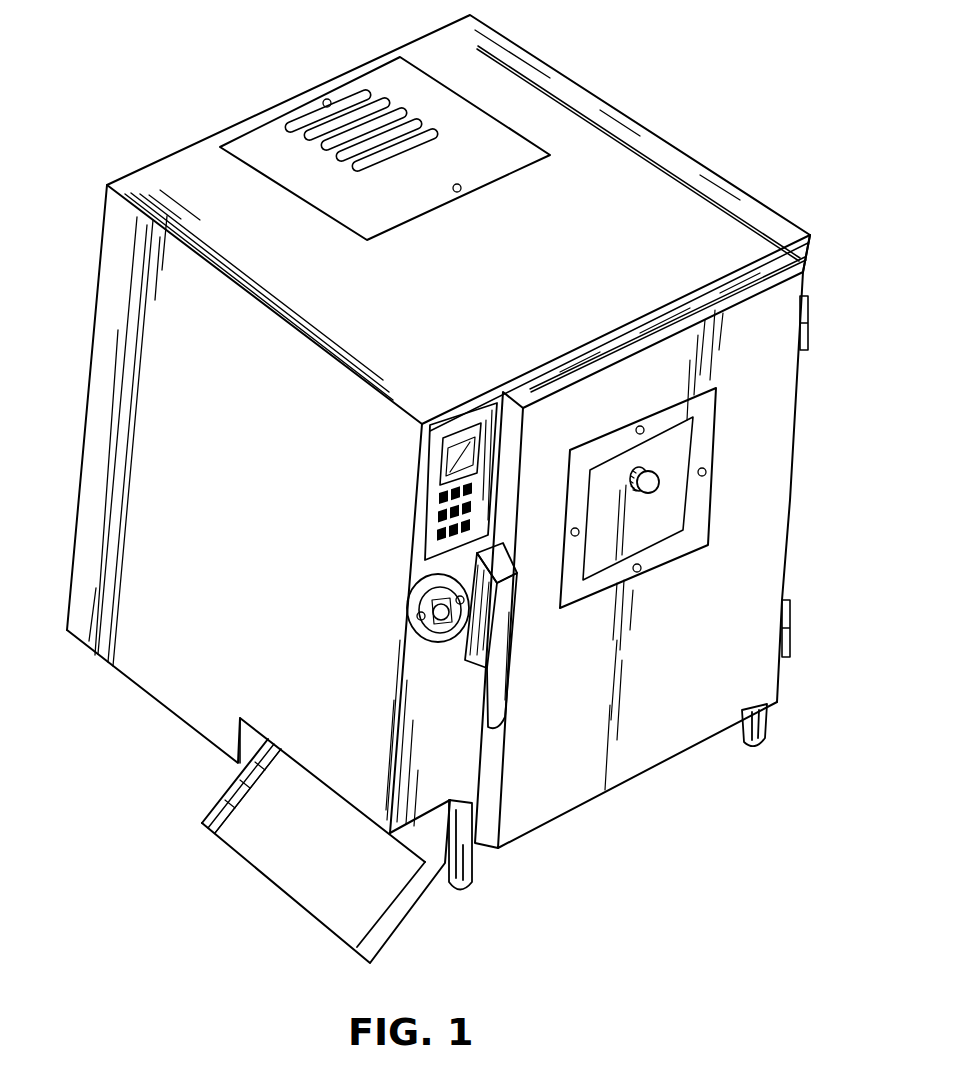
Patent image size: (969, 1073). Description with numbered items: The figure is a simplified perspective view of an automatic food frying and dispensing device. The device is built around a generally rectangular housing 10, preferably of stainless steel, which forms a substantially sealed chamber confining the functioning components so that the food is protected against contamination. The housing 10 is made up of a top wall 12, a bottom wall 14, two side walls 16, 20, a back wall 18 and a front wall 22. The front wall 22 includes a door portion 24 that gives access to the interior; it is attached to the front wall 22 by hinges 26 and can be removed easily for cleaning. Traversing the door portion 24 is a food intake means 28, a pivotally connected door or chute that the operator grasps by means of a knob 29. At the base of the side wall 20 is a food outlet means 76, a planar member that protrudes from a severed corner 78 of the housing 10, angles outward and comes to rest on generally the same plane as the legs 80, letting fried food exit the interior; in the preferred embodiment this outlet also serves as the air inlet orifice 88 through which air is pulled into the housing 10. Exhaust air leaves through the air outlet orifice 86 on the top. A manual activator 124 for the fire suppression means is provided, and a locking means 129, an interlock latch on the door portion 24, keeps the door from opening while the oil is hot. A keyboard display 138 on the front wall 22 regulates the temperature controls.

The housing 10 is at (458, 493).
The top wall 12 is at (700, 208).
The bottom wall 14 is at (116, 690).
The side wall 16 is at (597, 77).
The back wall 18 is at (74, 377).
The side wall 20 is at (188, 690).
The front wall 22 is at (631, 560).
The door portion 24 is at (608, 793).
The hinges 26 is at (808, 328).
The food intake means 28 is at (662, 512).
The knob 29 is at (650, 470).
The food outlet means 76 is at (326, 848).
The severed corner 78 is at (375, 820).
The legs 80 is at (468, 864).
The air outlet orifice 86 is at (388, 105).
The air inlet orifice 88 is at (282, 860).
The manual activator 124 is at (412, 603).
The locking means 129 is at (505, 610).
The keyboard display 138 is at (450, 478).